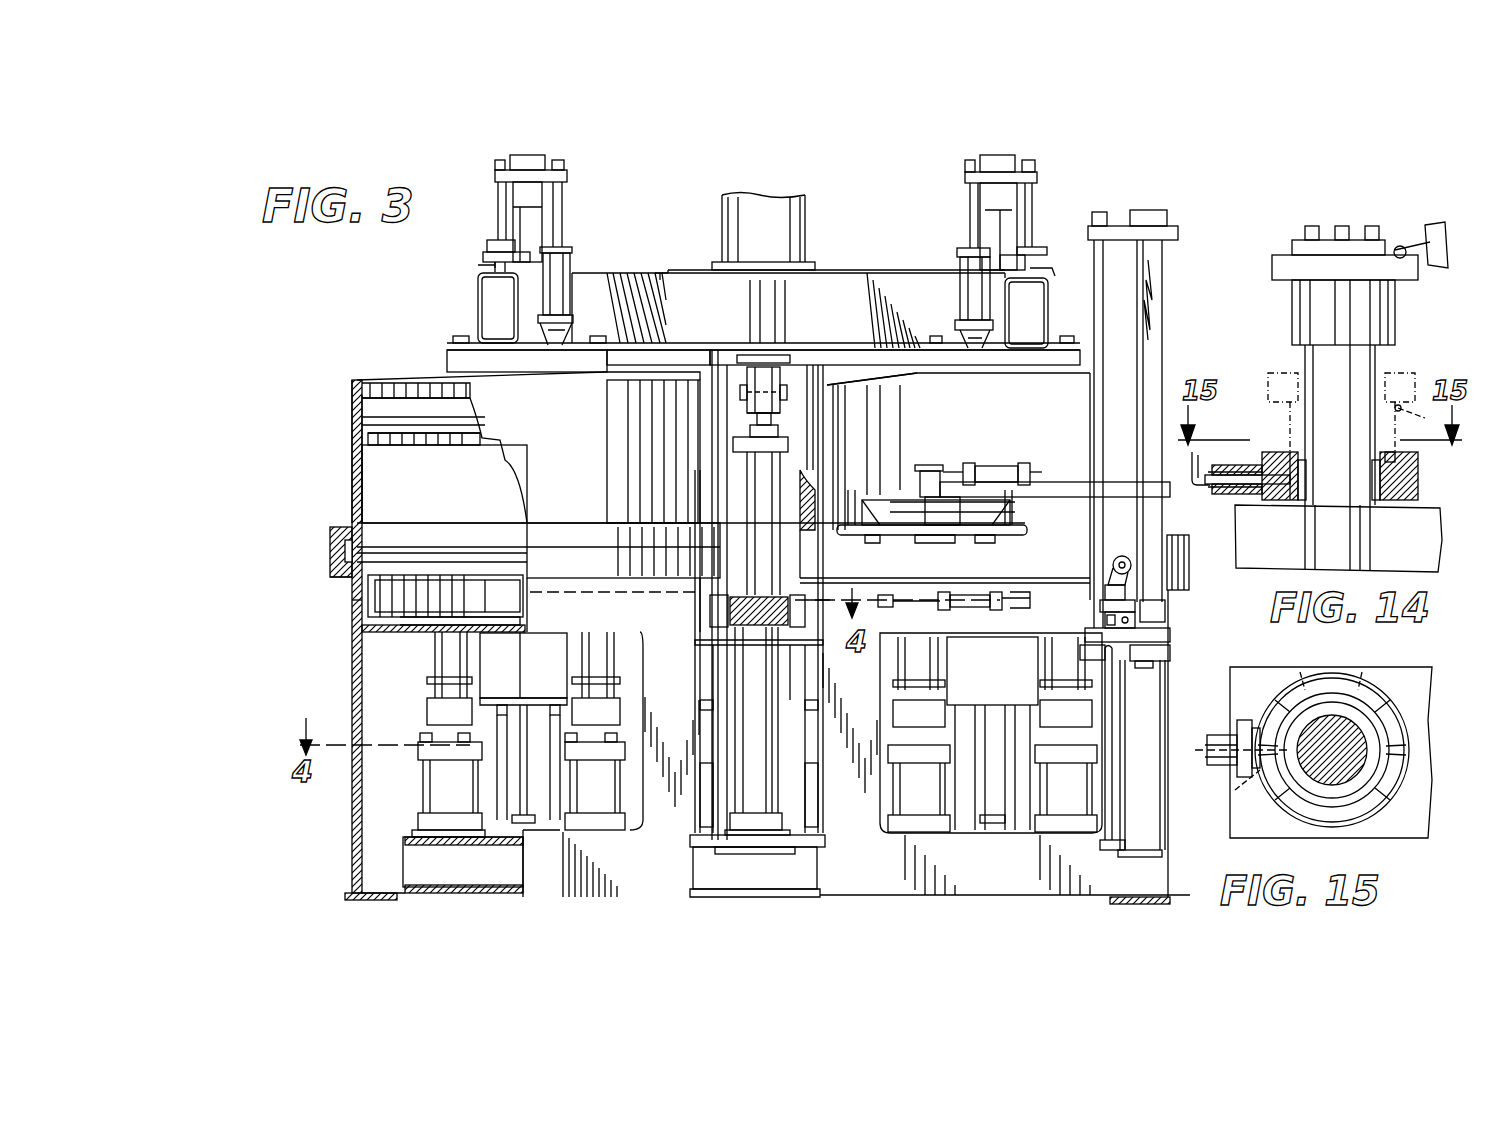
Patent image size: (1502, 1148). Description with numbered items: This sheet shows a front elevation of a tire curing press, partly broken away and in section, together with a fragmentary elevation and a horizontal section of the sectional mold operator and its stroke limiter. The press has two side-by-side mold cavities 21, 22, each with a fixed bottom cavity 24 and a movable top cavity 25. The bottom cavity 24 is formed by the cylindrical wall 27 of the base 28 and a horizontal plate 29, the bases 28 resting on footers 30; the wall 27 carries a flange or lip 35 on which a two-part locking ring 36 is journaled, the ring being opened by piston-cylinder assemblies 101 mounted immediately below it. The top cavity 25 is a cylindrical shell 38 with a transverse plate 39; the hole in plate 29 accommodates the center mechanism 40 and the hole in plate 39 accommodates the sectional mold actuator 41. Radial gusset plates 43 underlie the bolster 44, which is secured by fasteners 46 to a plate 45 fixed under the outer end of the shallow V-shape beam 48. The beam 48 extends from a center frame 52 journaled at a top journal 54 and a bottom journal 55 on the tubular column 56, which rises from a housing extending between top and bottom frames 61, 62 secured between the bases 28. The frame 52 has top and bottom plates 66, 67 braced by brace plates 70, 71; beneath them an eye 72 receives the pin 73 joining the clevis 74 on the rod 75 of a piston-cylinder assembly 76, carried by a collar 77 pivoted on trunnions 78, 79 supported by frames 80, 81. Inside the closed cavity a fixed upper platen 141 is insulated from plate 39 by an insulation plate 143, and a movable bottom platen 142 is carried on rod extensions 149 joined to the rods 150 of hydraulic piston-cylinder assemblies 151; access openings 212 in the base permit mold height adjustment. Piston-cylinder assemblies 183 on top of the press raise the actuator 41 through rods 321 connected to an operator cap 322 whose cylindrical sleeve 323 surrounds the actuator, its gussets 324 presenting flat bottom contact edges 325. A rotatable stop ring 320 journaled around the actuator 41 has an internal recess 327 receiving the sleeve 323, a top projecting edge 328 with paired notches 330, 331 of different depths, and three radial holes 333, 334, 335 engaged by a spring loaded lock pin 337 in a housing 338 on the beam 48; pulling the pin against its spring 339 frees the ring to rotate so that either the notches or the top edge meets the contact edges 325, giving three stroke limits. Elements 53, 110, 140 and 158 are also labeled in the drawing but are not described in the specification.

In FIG. 3, the mold cavity 21 is at (350, 404).
In FIG. 3, the mold cavity 22 is at (1028, 383).
In FIG. 3, the fixed bottom cavity 24 is at (345, 604).
In FIG. 3, the movable top cavity 25 is at (350, 497).
In FIG. 3, the cylindrical wall 27 is at (352, 686).
In FIG. 3, the base 28 is at (345, 832).
In FIG. 3, the horizontal plate 29 is at (378, 632).
In FIG. 3, the footers 30 is at (697, 890).
In FIG. 3, the flange or lip 35 is at (330, 572).
In FIG. 3, the two-part locking ring 36 is at (330, 545).
In FIG. 3, the cylindrical shell 38 is at (352, 450).
In FIG. 3, the transverse plate 39 is at (462, 417).
In FIG. 3, the center mechanism 40 is at (540, 660).
In FIG. 3, the sectional mold actuator 41 is at (535, 216).
In FIG. 14, the sectional mold actuator 41 is at (1370, 360).
In FIG. 15, the sectional mold actuator 41 is at (1302, 782).
In FIG. 3, the gusset plates 43 is at (420, 370).
In FIG. 3, the bolster 44 is at (447, 358).
In FIG. 3, the similarly profiled plate 45 is at (447, 343).
In FIG. 3, the fasteners 46 is at (461, 336).
In FIG. 3, the shallow V-shape beam 48 is at (885, 268).
In FIG. 14, the shallow V-shape beam 48 is at (1255, 560).
In FIG. 15, the shallow V-shape beam 48 is at (1300, 830).
In FIG. 3, the center frame 52 is at (825, 265).
In FIG. 3, the plate 53 is at (815, 370).
In FIG. 3, the top journal 54 is at (805, 262).
In FIG. 3, the bottom journal 55 is at (810, 535).
In FIG. 3, the tubular column 56 is at (805, 212).
In FIG. 3, the top frame 61 is at (812, 568).
In FIG. 3, the bottom frame 62 is at (803, 847).
In FIG. 3, the top plate 66 is at (690, 273).
In FIG. 3, the bottom plate 67 is at (662, 358).
In FIG. 3, the brace plate 70 is at (750, 303).
In FIG. 3, the brace plate 71 is at (778, 315).
In FIG. 3, the eye 72 is at (762, 365).
In FIG. 3, the pin 73 is at (787, 392).
In FIG. 3, the clevis 74 is at (745, 395).
In FIG. 3, the rod 75 is at (772, 420).
In FIG. 3, the piston-cylinder assembly 76 is at (780, 462).
In FIG. 3, the collar 77 is at (760, 645).
In FIG. 3, the trunnion 78 is at (710, 608).
In FIG. 3, the trunnion 79 is at (810, 606).
In FIG. 3, the frame 80 is at (700, 660).
In FIG. 3, the frame 81 is at (792, 650).
In FIG. 3, the piston-cylinder assemblies 101 is at (918, 612).
In FIG. 3, the table 110 is at (340, 525).
In FIG. 3, the housing 140 is at (375, 480).
In FIG. 3, the fixed upper platen 141 is at (425, 445).
In FIG. 3, the bottom platen 142 is at (438, 575).
In FIG. 3, the insulation plate 143 is at (470, 428).
In FIG. 3, the rod extensions 149 is at (607, 645).
In FIG. 3, the rods 150 is at (617, 695).
In FIG. 3, the hydraulic piston-cylinder assemblies 151 is at (452, 803).
In FIG. 3, the box 158 is at (505, 870).
In FIG. 3, the piston-cylinder assemblies 183 is at (572, 265).
In FIG. 3, the access openings 212 is at (628, 780).
In FIG. 3, the stop ring 320 is at (518, 270).
In FIG. 14, the stop ring 320 is at (1412, 488).
In FIG. 15, the stop ring 320 is at (1383, 700).
In FIG. 3, the rods 321 is at (565, 200).
In FIG. 3, the operator cap 322 is at (580, 174).
In FIG. 14, the operator cap 322 is at (1272, 260).
In FIG. 14, the cylindrical sleeve 323 is at (1395, 318).
In FIG. 14, the gussets 324 is at (1335, 326).
In FIG. 14, the flat bottom edge 325 is at (1335, 348).
In FIG. 14, the internal recess 327 is at (1290, 452).
In FIG. 14, the top projecting edge 328 is at (1405, 456).
In FIG. 15, the notches 330 is at (1392, 690).
In FIG. 15, the notches 331 is at (1280, 722).
In FIG. 15, the radial hole 333 is at (1235, 790).
In FIG. 15, the radial hole 334 is at (1300, 672).
In FIG. 15, the radial hole 335 is at (1362, 672).
In FIG. 14, the spring loaded lock pin 337 is at (1240, 495).
In FIG. 15, the spring loaded lock pin 337 is at (1208, 752).
In FIG. 14, the housing 338 is at (1228, 460).
In FIG. 14, the spring 339 is at (1232, 490).